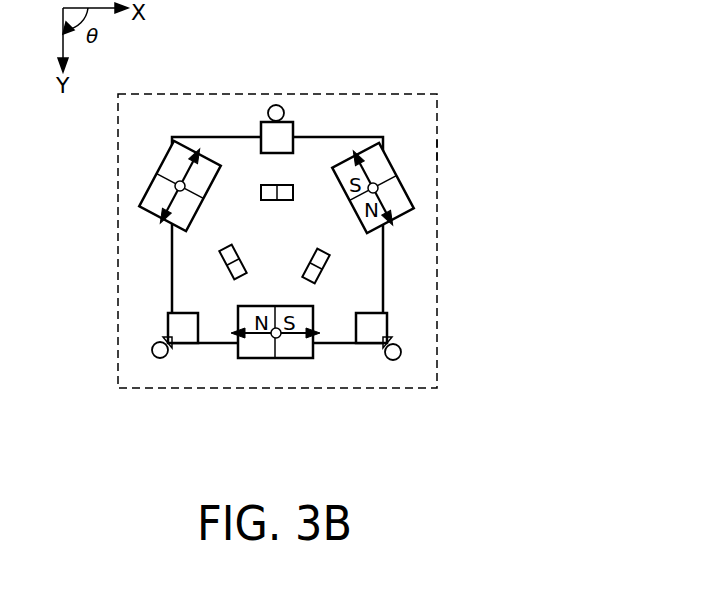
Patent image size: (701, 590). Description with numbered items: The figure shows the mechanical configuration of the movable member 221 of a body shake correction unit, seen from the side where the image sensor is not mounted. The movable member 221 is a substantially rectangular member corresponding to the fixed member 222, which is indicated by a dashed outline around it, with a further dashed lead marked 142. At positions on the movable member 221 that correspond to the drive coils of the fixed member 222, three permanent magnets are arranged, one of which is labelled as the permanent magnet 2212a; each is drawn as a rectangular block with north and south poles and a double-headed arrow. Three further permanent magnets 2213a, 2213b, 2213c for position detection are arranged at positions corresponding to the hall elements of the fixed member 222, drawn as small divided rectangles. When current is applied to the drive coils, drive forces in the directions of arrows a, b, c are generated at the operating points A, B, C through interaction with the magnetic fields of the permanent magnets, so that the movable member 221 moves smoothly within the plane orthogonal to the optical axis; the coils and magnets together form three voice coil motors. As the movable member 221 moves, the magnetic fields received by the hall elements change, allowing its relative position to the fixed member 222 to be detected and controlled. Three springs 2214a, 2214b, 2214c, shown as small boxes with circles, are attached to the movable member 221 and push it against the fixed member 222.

The movable member 221 is at (390, 295).
The fixed member 222 is at (392, 94).
The yoke 142 is at (440, 153).
The permanent magnet 2212a is at (187, 145).
The permanent magnet for position detection 2213a is at (318, 277).
The permanent magnet for position detection 2213b is at (220, 262).
The permanent magnet for position detection 2213c is at (293, 190).
The spring 2214a is at (158, 358).
The spring 2214b is at (284, 107).
The spring 2214c is at (395, 360).
The operating point A is at (176, 185).
The operating point B is at (379, 183).
The operating point C is at (269, 340).
The arrow indicating drive force direction a is at (170, 198).
The arrow indicating drive force direction b is at (390, 197).
The arrow indicating drive force direction c is at (292, 337).